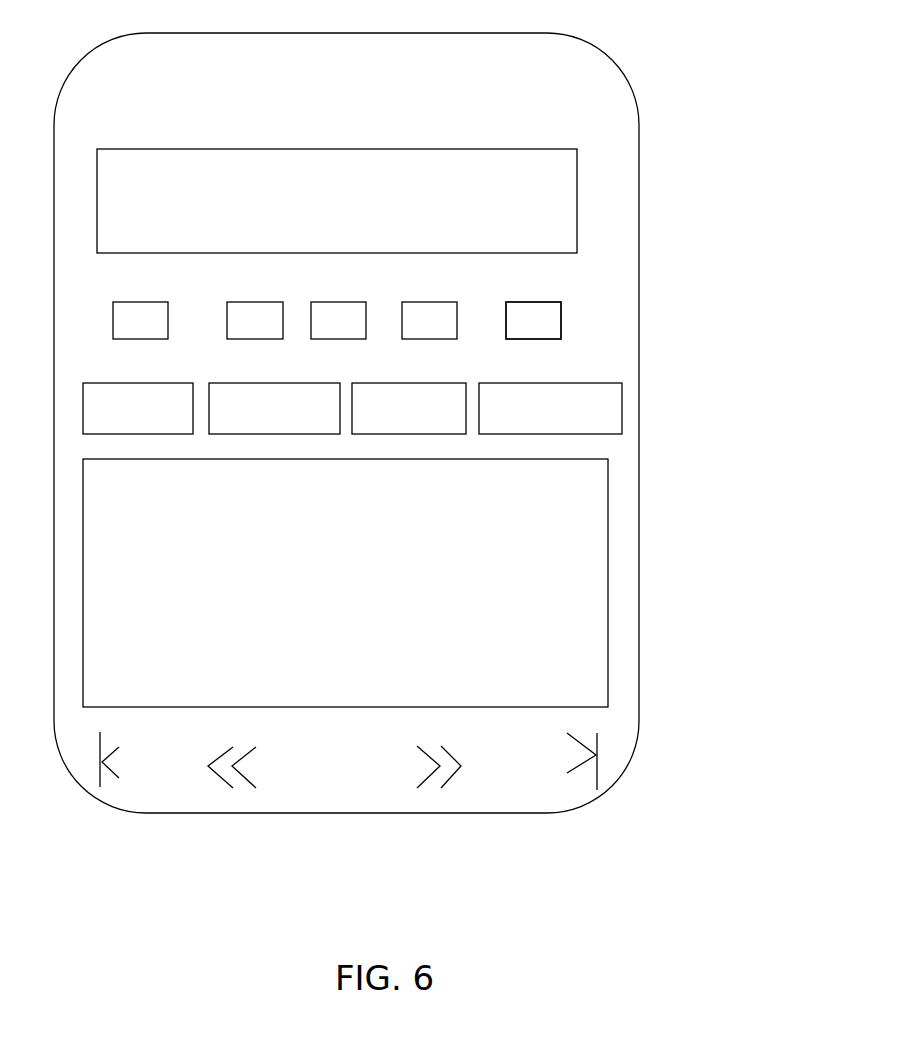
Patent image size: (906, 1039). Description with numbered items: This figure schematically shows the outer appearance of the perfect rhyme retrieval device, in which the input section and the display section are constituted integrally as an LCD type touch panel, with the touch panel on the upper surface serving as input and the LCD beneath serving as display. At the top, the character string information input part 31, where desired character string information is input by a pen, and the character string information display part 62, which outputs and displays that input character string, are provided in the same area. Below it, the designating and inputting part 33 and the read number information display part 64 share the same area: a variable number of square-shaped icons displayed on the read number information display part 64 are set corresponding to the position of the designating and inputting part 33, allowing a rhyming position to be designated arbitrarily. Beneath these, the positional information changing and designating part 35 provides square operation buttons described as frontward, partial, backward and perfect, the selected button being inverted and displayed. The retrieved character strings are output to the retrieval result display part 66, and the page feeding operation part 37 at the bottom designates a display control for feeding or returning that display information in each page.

The character string information input part 31 is at (492, 142).
The character string information display part 62 is at (578, 159).
The designating and inputting part 33 is at (577, 299).
The read number information display part 64 is at (577, 318).
The positional information changing and designating part 35 is at (607, 407).
The retrieval result display part 66 is at (608, 560).
The page feeding operation part 37 is at (610, 755).